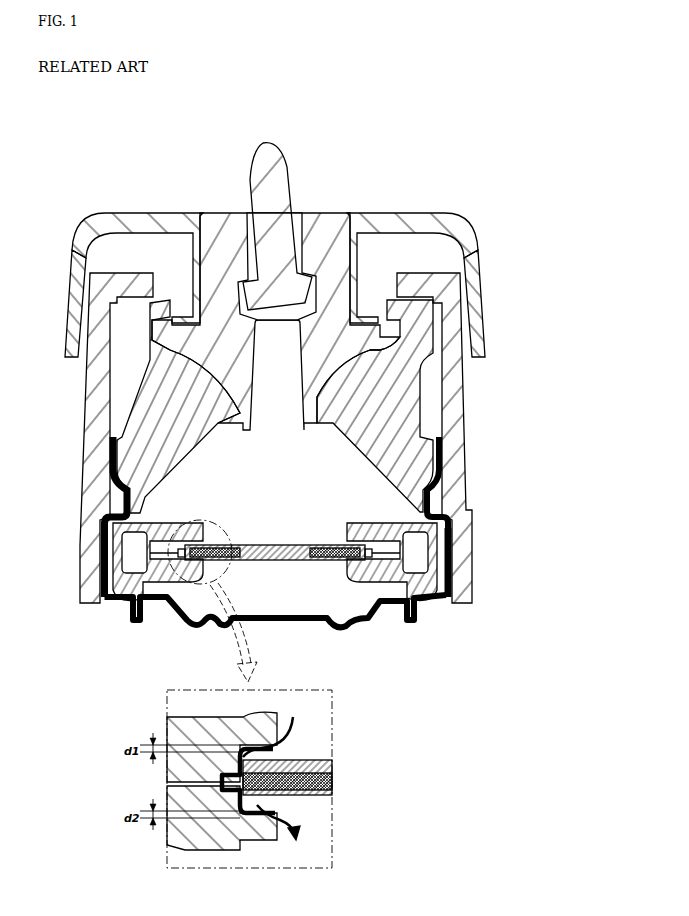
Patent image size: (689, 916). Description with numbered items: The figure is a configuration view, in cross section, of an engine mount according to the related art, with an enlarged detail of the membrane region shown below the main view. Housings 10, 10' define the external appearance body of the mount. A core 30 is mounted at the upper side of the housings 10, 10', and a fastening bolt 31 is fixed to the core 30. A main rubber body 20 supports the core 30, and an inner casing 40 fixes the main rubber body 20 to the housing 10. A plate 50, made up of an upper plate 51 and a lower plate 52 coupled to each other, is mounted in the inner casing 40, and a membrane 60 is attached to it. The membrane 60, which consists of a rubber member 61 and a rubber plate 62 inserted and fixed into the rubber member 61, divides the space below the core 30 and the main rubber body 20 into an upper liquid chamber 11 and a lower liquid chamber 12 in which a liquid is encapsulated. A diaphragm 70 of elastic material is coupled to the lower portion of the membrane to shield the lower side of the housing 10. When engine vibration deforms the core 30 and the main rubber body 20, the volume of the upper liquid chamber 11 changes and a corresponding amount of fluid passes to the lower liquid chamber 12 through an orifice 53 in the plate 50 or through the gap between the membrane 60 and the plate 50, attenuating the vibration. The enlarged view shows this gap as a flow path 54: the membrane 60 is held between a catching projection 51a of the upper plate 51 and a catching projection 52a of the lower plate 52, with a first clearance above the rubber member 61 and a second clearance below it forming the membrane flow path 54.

The housing 10 is at (302, 408).
The housing 10' is at (308, 303).
The upper liquid chamber 11 is at (308, 466).
The lower liquid chamber 12 is at (242, 596).
The main rubber body 20 is at (145, 412).
The core 30 is at (330, 225).
The fastening bolt 31 is at (275, 160).
The inner casing 40 is at (442, 440).
The plate 50 is at (450, 598).
The upper plate 51 is at (449, 512).
The catching projection 51a is at (266, 713).
The lower plate 52 is at (388, 573).
The catching projection 52a is at (275, 842).
The orifice 53 is at (135, 560).
The flow path 54 is at (236, 812).
The membrane 60 is at (275, 630).
The rubber member 61 is at (292, 561).
The rubber plate 62 is at (322, 548).
The diaphragm 70 is at (170, 616).